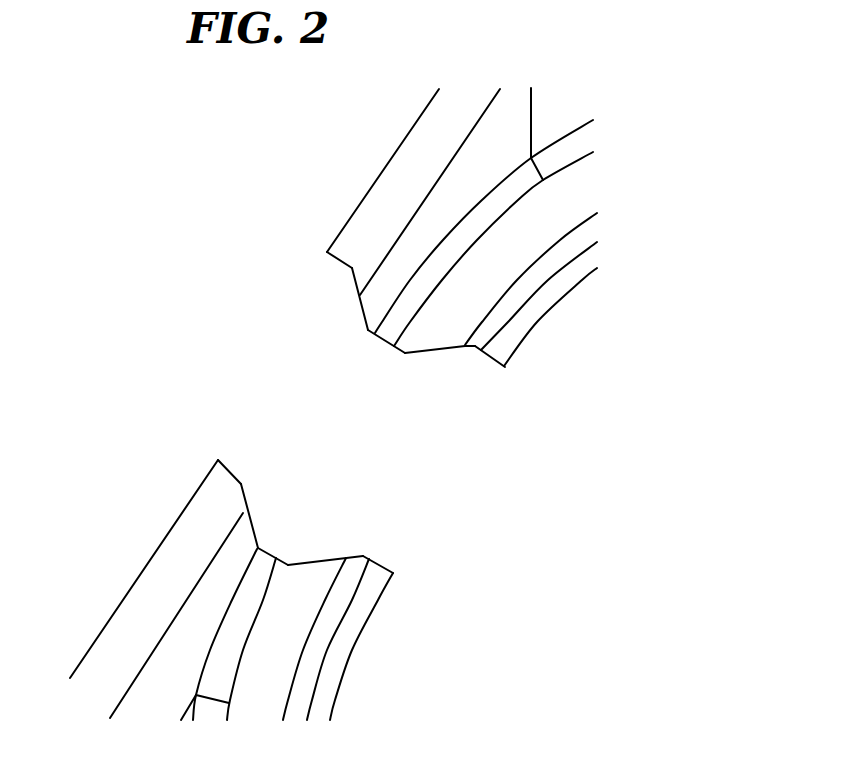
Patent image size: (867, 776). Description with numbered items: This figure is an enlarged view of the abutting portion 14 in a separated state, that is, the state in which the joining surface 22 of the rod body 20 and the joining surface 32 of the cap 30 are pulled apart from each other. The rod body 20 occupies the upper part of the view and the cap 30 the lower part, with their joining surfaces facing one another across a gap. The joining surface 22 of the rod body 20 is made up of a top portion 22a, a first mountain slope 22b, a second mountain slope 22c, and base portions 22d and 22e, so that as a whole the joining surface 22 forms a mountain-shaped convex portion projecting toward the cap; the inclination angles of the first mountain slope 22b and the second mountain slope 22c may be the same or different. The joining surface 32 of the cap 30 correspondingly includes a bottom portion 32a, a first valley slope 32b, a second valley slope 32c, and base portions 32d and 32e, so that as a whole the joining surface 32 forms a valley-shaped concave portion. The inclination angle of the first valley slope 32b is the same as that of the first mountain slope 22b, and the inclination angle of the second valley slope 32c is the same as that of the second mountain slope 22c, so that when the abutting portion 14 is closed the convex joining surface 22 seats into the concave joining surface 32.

The abutting portion 14 is at (316, 412).
The rod body 20 is at (390, 147).
The joining surface 22 is at (376, 368).
The top portion 22a is at (385, 344).
The first mountain slope 22b is at (356, 292).
The second mountain slope 22c is at (455, 350).
The base portion 22d is at (346, 264).
The base portion 22e is at (505, 396).
The cap 30 is at (158, 540).
The joining surface 32 is at (295, 478).
The bottom portion 32a is at (272, 556).
The first valley slope 32b is at (244, 494).
The second valley slope 32c is at (328, 558).
The base portion 32d is at (232, 466).
The base portion 32e is at (416, 552).